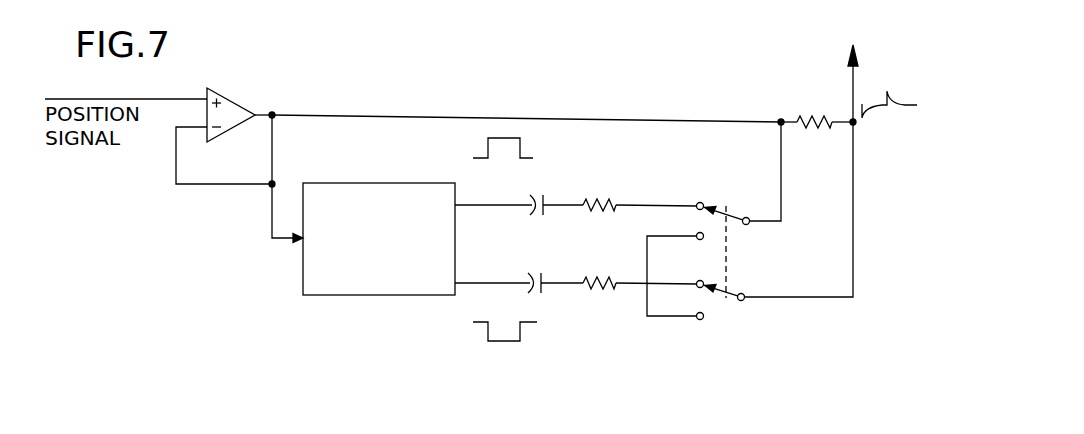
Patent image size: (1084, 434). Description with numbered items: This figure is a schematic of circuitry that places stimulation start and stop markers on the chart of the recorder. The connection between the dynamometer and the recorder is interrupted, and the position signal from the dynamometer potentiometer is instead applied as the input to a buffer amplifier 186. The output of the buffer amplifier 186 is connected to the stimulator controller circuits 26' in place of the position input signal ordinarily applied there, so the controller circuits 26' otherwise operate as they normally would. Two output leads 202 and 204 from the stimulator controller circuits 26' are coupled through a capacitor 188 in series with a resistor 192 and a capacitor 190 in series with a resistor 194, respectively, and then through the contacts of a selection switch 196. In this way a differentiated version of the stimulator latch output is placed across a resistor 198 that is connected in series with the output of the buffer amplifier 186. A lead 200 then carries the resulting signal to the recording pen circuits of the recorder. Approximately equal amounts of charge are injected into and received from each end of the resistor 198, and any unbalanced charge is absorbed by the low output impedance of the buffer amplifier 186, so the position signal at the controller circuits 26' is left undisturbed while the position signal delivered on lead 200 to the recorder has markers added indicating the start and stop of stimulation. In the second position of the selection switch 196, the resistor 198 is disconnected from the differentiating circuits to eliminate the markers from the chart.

The buffer amplifier 186 is at (236, 100).
The stimulator controller circuits 26' is at (379, 217).
The capacitor 188 is at (544, 192).
The capacitor 190 is at (540, 295).
The resistor 192 is at (598, 200).
The resistor 194 is at (603, 289).
The selection switch 196 is at (727, 260).
The resistor 198 is at (817, 115).
The lead 200 is at (854, 80).
The lead 202 is at (492, 207).
The lead 204 is at (485, 285).